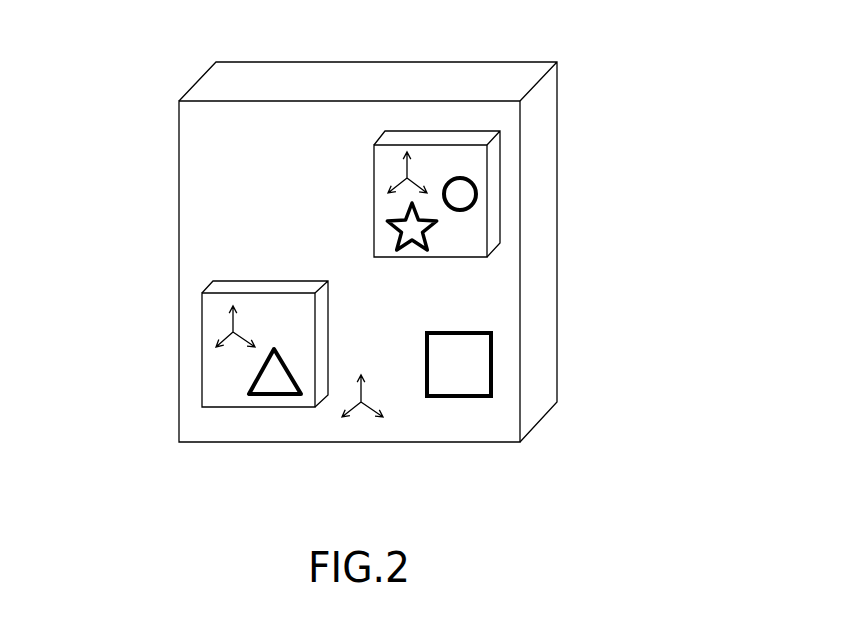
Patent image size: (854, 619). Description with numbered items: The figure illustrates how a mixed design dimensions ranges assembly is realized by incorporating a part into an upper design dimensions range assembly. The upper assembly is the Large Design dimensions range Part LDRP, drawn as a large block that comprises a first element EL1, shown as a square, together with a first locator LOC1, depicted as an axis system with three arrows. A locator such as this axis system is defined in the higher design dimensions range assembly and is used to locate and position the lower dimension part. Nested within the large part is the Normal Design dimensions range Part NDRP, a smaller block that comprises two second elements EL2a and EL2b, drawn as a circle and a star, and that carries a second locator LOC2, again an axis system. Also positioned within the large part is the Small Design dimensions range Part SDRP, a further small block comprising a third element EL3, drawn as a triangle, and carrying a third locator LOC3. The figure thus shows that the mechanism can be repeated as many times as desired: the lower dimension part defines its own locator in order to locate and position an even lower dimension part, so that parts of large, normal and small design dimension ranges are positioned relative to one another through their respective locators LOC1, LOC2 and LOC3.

The Large Design dimensions range Part LDRP is at (252, 180).
The Normal Design dimensions range Part NDRP is at (468, 156).
The Small Design dimensions range Part SDRP is at (217, 381).
The first locator LOC1 is at (362, 407).
The second locator LOC2 is at (405, 176).
The third locator LOC3 is at (233, 332).
The first element EL1 is at (460, 398).
The second element EL2a is at (478, 193).
The second element EL2b is at (427, 233).
The third element EL3 is at (267, 395).